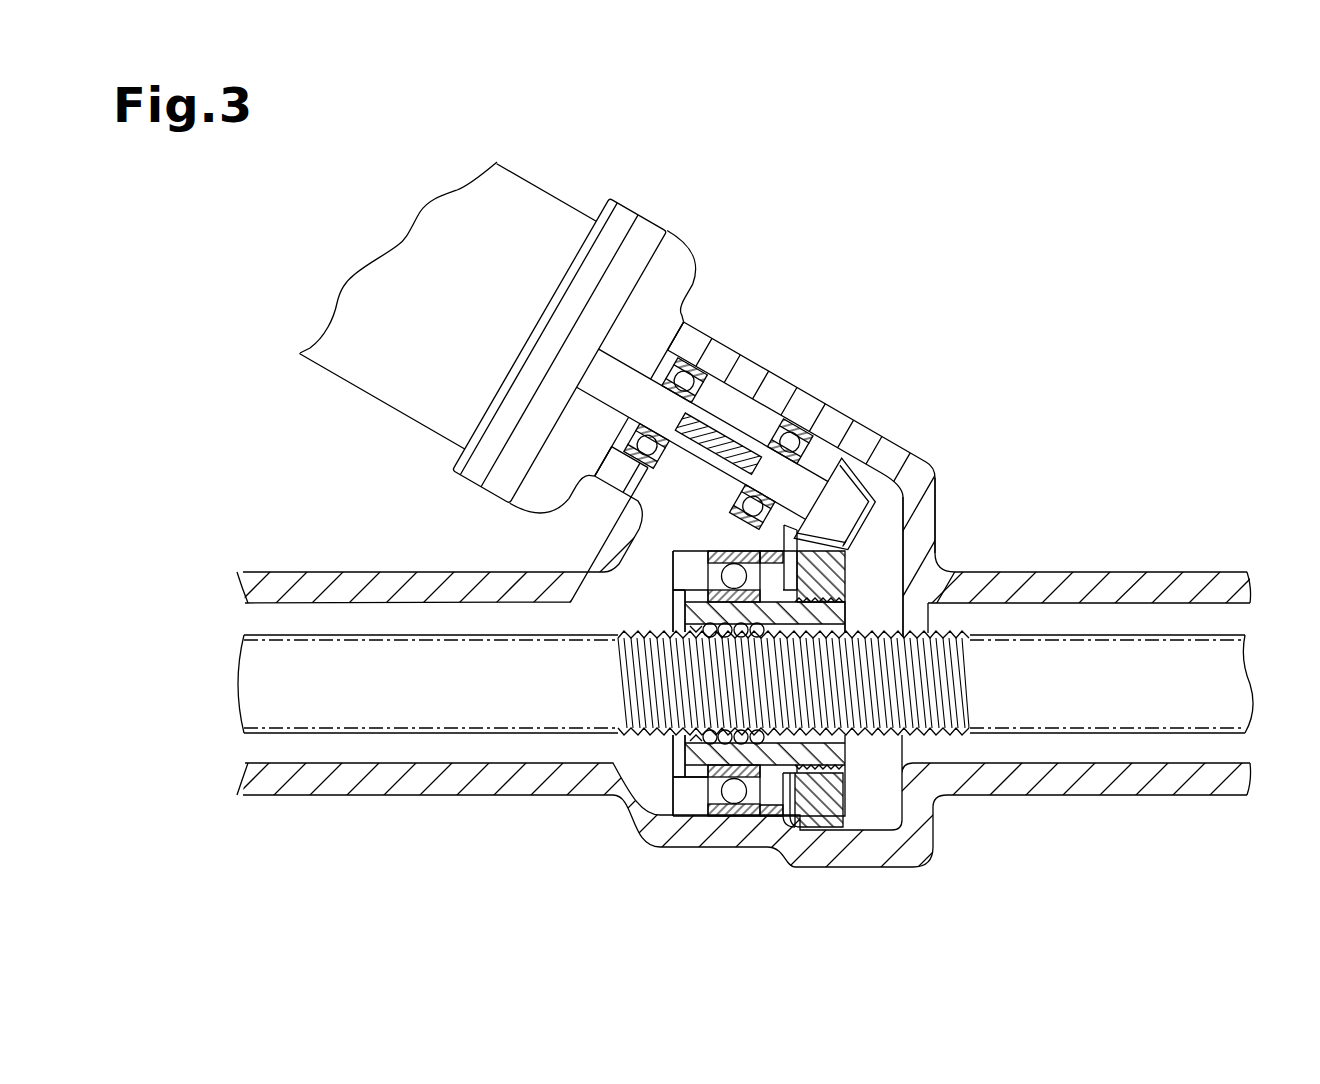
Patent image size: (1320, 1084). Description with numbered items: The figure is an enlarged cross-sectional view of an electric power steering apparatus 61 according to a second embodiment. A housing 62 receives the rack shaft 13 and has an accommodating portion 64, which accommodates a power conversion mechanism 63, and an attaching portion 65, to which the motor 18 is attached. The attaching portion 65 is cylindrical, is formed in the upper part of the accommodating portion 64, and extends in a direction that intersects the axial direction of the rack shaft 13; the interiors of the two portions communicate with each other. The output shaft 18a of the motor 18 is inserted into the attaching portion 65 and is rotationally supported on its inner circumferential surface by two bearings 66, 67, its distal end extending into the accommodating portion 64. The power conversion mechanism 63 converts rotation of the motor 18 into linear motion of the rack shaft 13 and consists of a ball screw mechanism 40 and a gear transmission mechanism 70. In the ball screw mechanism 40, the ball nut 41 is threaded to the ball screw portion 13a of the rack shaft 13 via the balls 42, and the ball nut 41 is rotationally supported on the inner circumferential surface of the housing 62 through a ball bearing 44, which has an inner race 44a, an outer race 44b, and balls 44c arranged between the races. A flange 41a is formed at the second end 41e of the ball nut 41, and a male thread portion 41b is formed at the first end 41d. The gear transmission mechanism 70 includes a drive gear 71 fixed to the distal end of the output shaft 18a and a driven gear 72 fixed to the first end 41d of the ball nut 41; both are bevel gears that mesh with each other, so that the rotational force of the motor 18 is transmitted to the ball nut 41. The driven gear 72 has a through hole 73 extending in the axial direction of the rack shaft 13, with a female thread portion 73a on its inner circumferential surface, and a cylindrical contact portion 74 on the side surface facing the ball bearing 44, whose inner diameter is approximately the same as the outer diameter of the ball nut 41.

The rack shaft 13 is at (764, 670).
The ball screw portion 13a is at (944, 632).
The motor 18 is at (541, 196).
The output shaft 18a is at (756, 450).
The ball screw mechanism 40 is at (846, 628).
The ball nut 41 is at (735, 734).
The flange 41a is at (696, 772).
The male thread portion 41b is at (804, 820).
The first end 41d is at (842, 776).
The second end 41e is at (684, 610).
The balls 42 is at (690, 740).
The ball bearing 44 is at (635, 551).
The inner race 44a is at (705, 598).
The outer race 44b is at (705, 556).
The balls 44c is at (720, 575).
The electric power steering apparatus 61 is at (738, 611).
The housing 62 is at (1206, 572).
The power conversion mechanism 63 is at (1038, 478).
The accommodating portion 64 is at (922, 863).
The attaching portion 65 is at (754, 352).
The bearing 66 is at (700, 366).
The bearing 67 is at (812, 438).
The gear transmission mechanism 70 is at (906, 527).
The drive gear 71 is at (880, 490).
The driven gear 72 is at (868, 540).
The through hole 73 is at (853, 615).
The female thread portion 73a is at (820, 752).
The contact portion 74 is at (770, 776).